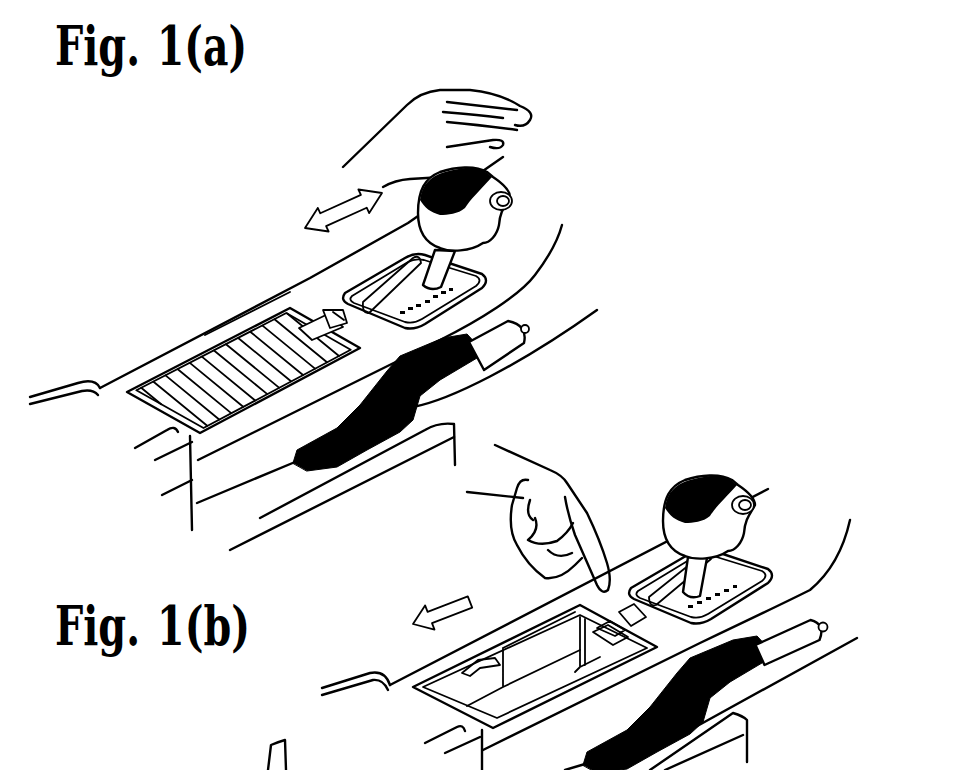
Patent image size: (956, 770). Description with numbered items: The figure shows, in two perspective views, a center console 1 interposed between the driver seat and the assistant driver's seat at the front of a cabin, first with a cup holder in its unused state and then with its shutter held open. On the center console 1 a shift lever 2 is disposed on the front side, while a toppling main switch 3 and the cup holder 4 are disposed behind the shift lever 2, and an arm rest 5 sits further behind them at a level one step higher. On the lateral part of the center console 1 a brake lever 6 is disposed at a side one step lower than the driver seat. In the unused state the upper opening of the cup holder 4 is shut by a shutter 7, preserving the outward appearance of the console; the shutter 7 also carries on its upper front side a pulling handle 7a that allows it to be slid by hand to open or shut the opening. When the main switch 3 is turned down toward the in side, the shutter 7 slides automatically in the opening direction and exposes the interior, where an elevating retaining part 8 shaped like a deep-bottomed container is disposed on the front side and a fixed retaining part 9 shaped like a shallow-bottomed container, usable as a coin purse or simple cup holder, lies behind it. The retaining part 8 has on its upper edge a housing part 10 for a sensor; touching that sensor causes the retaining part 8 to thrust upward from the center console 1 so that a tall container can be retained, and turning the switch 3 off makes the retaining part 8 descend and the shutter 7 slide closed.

In FIG. 1A, the center console 1 is at (588, 302).
In FIG. 1B, the center console 1 is at (777, 513).
In FIG. 1A, the shift lever 2 is at (472, 225).
In FIG. 1B, the shift lever 2 is at (697, 478).
In FIG. 1A, the toppling main switch 3 is at (325, 308).
In FIG. 1B, the toppling main switch 3 is at (633, 587).
In FIG. 1A, the cup holder 4 is at (208, 358).
In FIG. 1B, the cup holder 4 is at (478, 645).
In FIG. 1A, the arm rest 5 is at (78, 403).
In FIG. 1B, the arm rest 5 is at (343, 703).
In FIG. 1A, the brake lever 6 is at (500, 345).
In FIG. 1B, the brake lever 6 is at (760, 643).
In FIG. 1A, the shutter 7 is at (187, 372).
In FIG. 1A, the cover tab 7a is at (351, 336).
In FIG. 1B, the elevating retaining part 8 is at (546, 642).
In FIG. 1B, the fixed retaining part 9 is at (457, 685).
In FIG. 1B, the housing part 10 is at (642, 634).